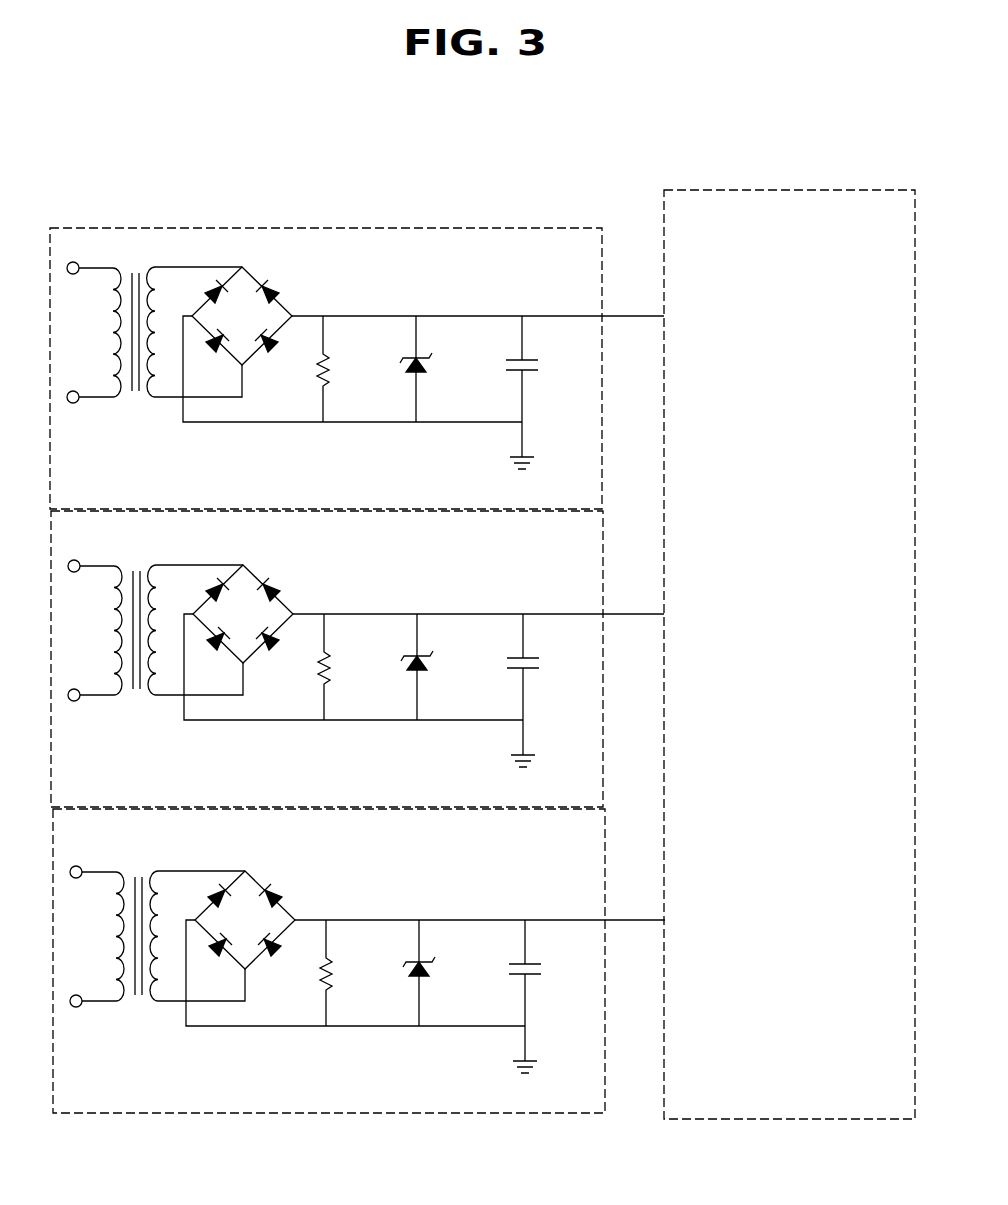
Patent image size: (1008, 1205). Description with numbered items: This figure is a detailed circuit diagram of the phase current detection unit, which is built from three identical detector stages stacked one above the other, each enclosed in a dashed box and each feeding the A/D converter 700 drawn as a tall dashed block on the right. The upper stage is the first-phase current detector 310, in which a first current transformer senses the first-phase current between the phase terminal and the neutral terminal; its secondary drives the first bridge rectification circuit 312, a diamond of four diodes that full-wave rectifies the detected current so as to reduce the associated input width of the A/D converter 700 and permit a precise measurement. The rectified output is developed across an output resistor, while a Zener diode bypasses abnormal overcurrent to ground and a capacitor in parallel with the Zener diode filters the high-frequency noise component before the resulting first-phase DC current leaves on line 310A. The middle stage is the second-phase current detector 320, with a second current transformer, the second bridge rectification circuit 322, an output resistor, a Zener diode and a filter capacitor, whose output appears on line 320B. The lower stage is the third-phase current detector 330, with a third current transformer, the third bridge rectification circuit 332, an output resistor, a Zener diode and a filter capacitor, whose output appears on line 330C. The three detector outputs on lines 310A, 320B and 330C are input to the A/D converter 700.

The AΦ current detector 310 is at (227, 228).
The first bridge rectification circuit 312 is at (250, 275).
The AΦ detector output line 310A is at (630, 316).
The BΦ current detector 320 is at (603, 577).
The second bridge rectification circuit 322 is at (263, 605).
The BΦ detector output line 320B is at (632, 614).
The CΦ current detector 330 is at (604, 878).
The third bridge rectification circuit 332 is at (267, 913).
The CΦ detector output line 330C is at (633, 920).
The A/D converter 700 is at (728, 190).